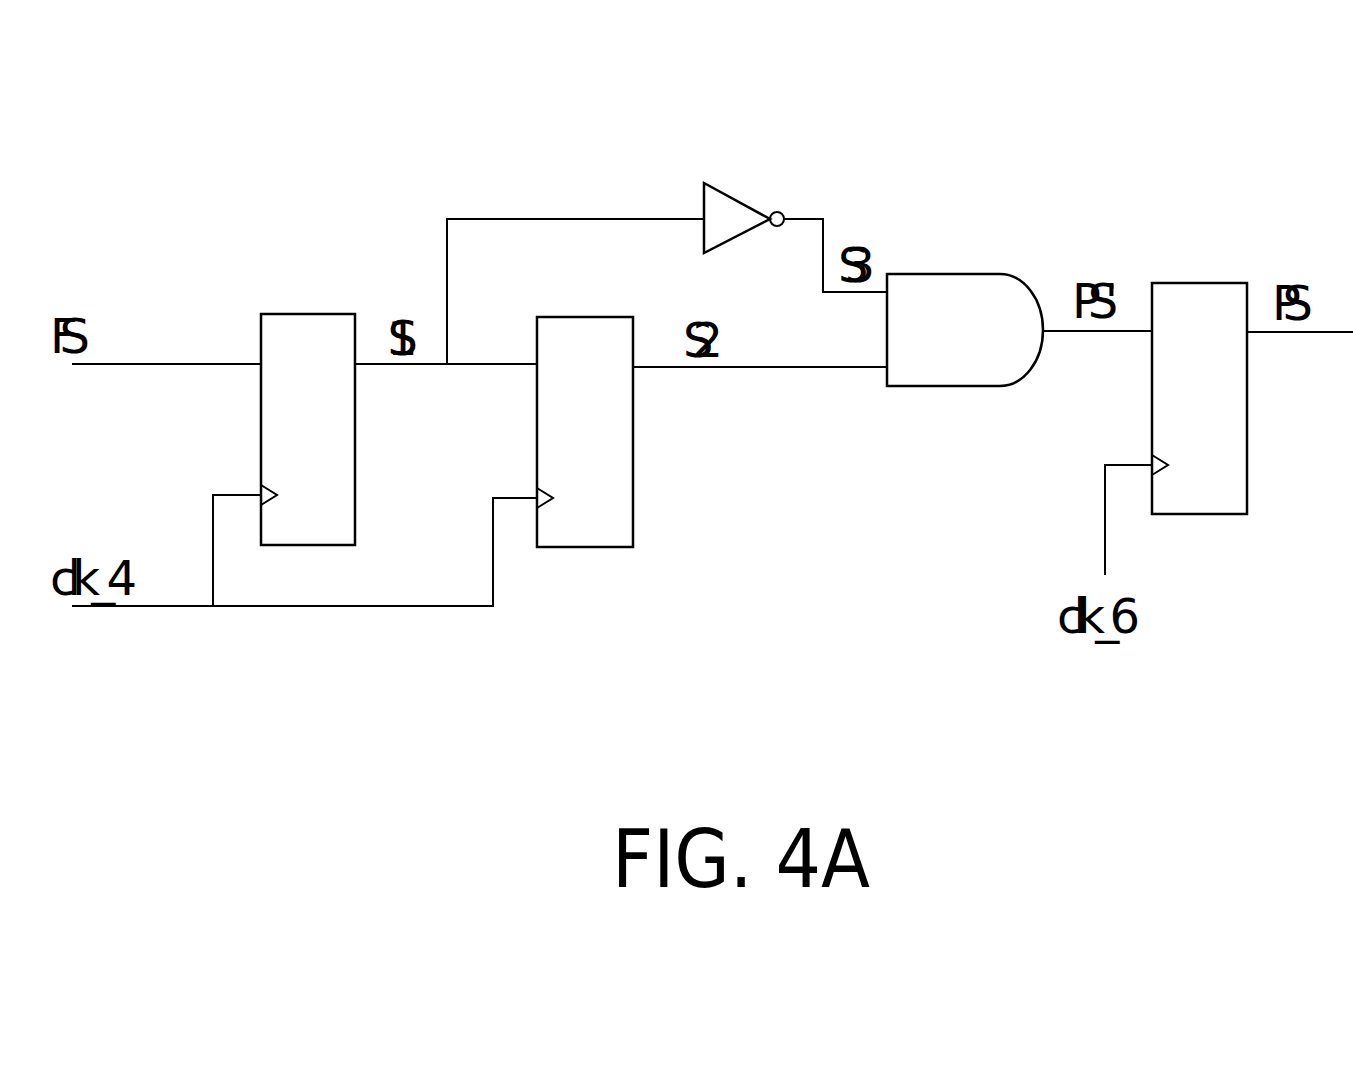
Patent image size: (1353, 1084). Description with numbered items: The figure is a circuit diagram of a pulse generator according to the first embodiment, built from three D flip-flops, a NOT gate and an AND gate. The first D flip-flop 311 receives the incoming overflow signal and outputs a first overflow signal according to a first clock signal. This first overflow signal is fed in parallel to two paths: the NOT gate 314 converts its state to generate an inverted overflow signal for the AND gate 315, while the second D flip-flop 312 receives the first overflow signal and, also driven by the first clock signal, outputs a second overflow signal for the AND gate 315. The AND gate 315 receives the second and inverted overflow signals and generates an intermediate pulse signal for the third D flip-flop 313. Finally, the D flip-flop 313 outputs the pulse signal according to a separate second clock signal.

The D flip-flop 311 is at (322, 314).
The D flip-flop 312 is at (600, 317).
The D flip-flop 313 is at (1214, 283).
The NOT gate 314 is at (738, 200).
The AND gate 315 is at (931, 274).